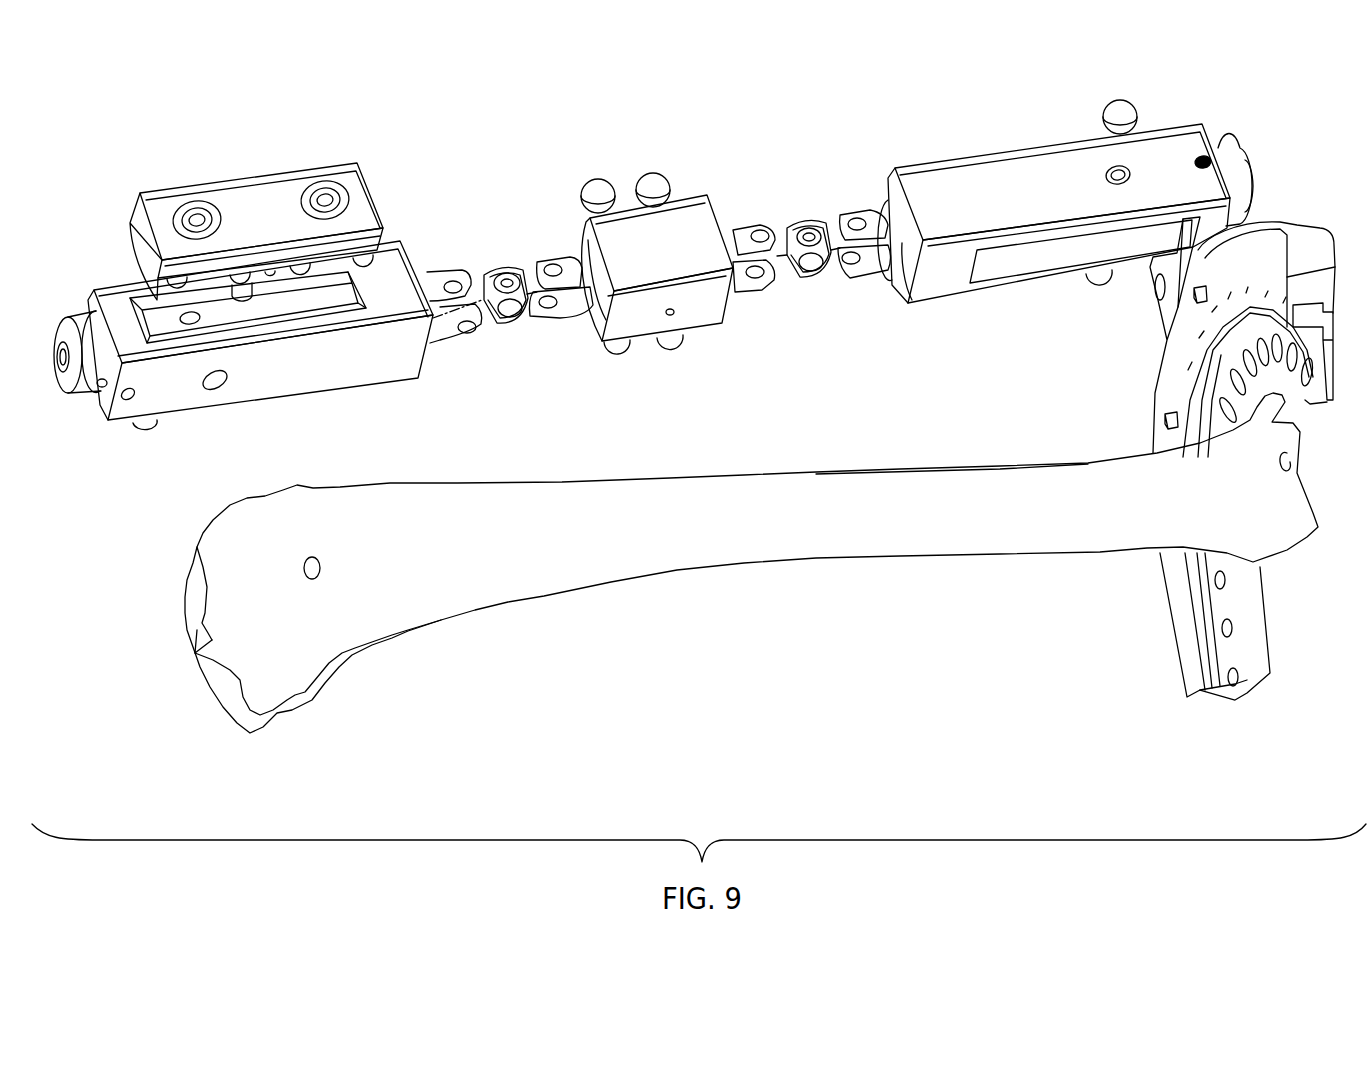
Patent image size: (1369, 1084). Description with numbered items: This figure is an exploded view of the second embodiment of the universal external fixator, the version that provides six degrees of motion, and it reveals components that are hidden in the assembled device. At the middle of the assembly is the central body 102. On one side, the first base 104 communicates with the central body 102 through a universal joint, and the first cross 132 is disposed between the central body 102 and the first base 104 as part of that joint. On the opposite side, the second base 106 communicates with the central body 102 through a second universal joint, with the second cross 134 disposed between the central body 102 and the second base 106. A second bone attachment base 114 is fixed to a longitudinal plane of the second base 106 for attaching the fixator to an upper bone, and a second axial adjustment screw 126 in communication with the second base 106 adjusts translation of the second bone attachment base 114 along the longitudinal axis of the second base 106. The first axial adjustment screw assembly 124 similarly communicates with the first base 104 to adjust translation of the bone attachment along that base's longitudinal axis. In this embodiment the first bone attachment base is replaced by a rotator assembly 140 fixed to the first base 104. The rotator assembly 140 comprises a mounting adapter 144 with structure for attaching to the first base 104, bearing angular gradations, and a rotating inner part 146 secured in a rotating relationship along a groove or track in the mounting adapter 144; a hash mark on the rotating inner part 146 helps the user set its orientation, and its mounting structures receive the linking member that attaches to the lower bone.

The central body 102 is at (687, 200).
The first base 104 is at (930, 163).
The second base 106 is at (327, 390).
The second bone attachment base 114 is at (183, 188).
The first axial adjustment screw assembly 124 is at (1252, 167).
The second axial adjustment screw 126 is at (100, 373).
The first cross 132 is at (798, 227).
The second cross 134 is at (517, 320).
The rotator assembly 140 is at (1146, 654).
The mounting adapter 144 is at (1293, 223).
The rotating inner part 146 is at (1250, 622).